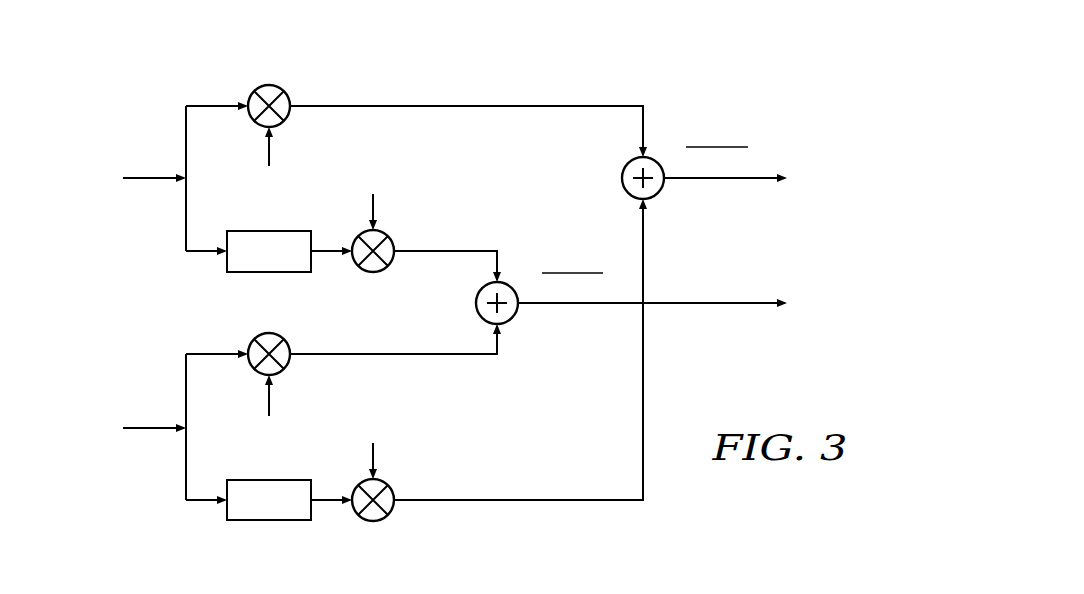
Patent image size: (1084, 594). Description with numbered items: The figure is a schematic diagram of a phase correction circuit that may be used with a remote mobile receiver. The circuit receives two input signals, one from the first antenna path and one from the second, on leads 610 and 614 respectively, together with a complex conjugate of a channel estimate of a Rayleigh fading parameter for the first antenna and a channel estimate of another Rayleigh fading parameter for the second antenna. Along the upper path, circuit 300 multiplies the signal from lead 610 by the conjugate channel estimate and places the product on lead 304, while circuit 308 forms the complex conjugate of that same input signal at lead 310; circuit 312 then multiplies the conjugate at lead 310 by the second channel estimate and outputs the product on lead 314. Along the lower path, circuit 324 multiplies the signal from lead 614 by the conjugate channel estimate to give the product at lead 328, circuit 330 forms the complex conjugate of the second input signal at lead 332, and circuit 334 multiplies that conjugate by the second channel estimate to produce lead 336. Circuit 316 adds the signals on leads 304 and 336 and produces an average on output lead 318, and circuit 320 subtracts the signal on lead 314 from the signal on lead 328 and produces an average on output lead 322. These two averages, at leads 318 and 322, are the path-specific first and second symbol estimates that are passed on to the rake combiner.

The circuit 300 is at (268, 85).
The lead 304 is at (526, 105).
The circuit 308 is at (227, 263).
The lead 310 is at (329, 251).
The circuit 312 is at (373, 273).
The lead 314 is at (467, 251).
The circuit 316 is at (622, 178).
The output lead 318 is at (728, 179).
The circuit 320 is at (476, 303).
The output lead 322 is at (728, 304).
The circuit 324 is at (268, 333).
The lead 328 is at (481, 355).
The circuit 330 is at (269, 521).
The lead 332 is at (329, 500).
The circuit 334 is at (373, 522).
The lead 336 is at (528, 501).
The lead 610 is at (161, 183).
The lead 614 is at (161, 432).